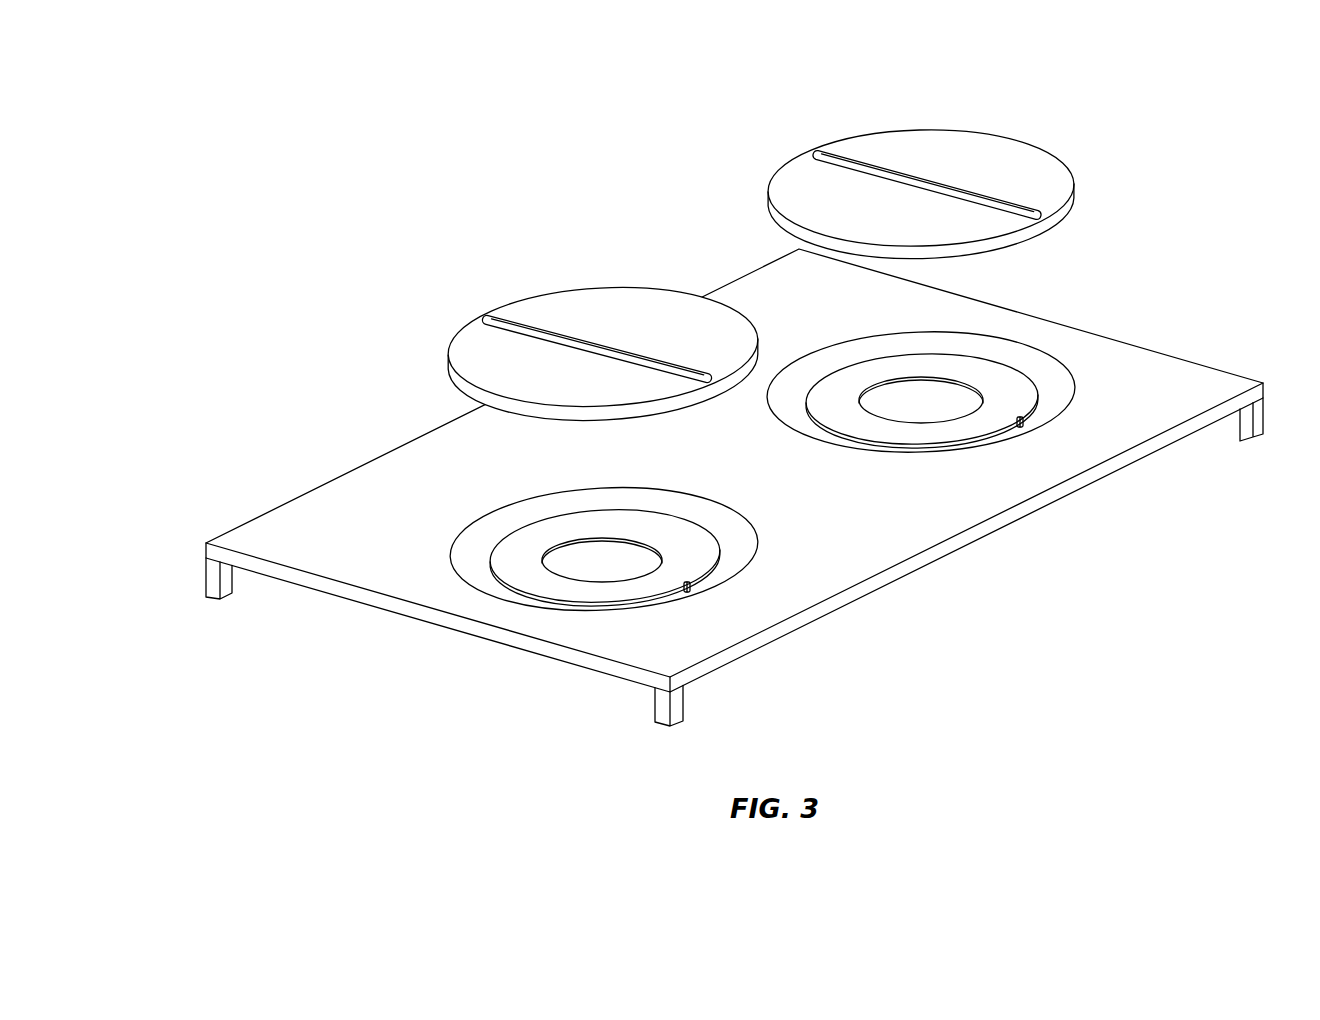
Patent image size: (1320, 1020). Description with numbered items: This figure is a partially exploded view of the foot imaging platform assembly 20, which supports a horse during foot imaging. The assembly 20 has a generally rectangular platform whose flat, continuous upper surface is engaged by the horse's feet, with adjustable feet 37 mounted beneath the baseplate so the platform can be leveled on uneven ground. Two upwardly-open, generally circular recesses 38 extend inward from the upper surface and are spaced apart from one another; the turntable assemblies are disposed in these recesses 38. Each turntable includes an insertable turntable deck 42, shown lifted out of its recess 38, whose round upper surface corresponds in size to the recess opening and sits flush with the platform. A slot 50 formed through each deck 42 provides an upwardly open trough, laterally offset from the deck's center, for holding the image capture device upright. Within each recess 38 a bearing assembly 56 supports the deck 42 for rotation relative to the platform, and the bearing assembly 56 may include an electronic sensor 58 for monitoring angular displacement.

The imaging platform assembly 20 is at (360, 212).
The adjustable feet 37 is at (210, 590).
The recesses 38 is at (487, 542).
The turntable deck 42 is at (470, 345).
The slot 50 is at (540, 328).
The bearing assembly 56 is at (482, 572).
The electronic sensor 58 is at (693, 588).